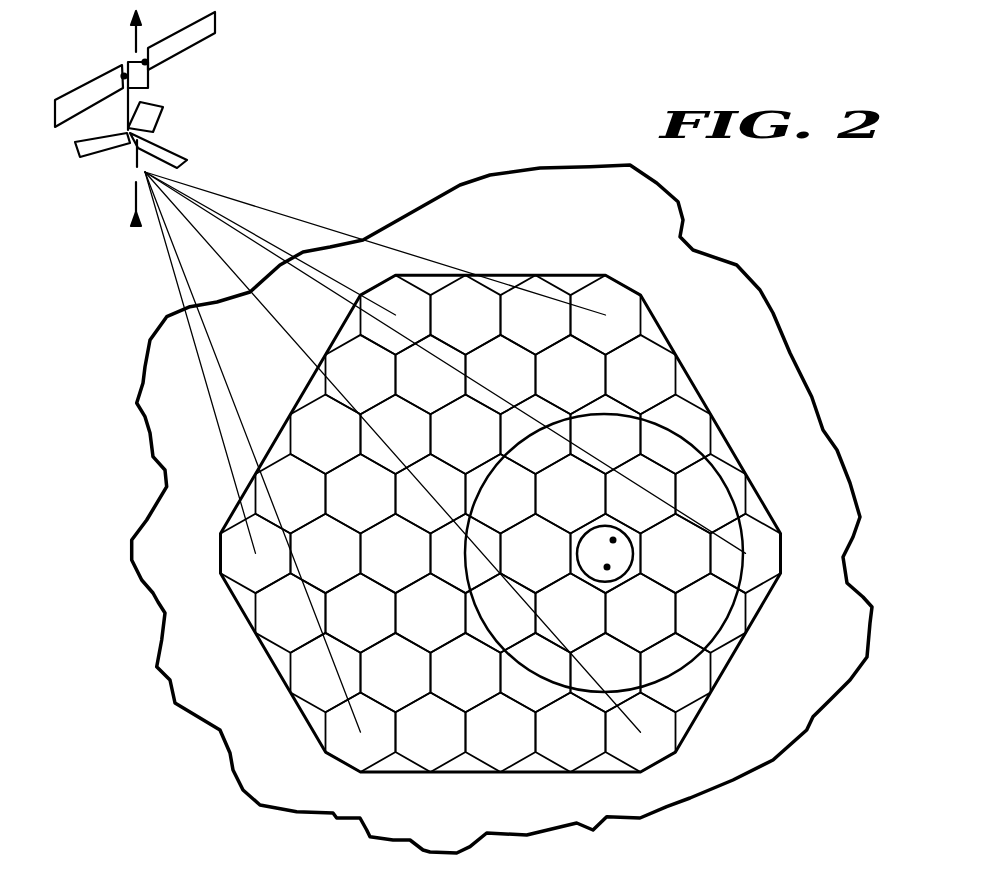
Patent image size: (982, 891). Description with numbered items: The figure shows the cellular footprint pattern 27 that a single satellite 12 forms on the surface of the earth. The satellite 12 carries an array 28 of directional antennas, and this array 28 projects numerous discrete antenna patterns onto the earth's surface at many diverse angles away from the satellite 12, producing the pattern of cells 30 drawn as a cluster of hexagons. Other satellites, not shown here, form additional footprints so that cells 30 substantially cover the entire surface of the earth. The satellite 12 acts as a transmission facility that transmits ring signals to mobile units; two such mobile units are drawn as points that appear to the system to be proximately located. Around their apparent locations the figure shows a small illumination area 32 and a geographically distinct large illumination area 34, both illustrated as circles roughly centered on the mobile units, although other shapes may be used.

The satellite 12 is at (114, 67).
The array of directional antennas 28 is at (135, 160).
The cells 30 is at (687, 418).
The large illumination area 34 is at (718, 630).
The cellular footprint pattern 27 is at (764, 601).
The small illumination area 32 is at (576, 555).